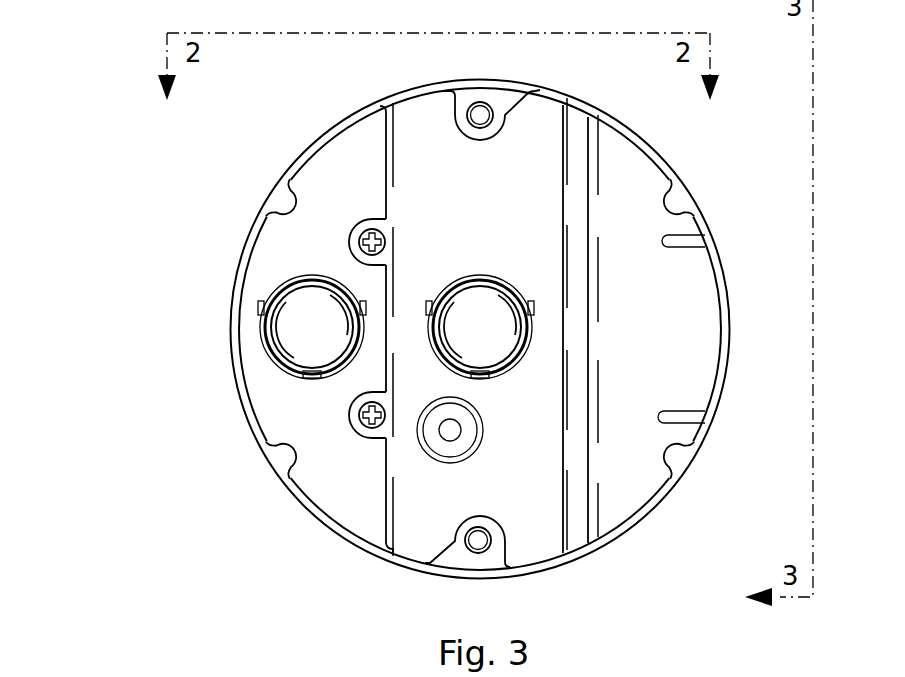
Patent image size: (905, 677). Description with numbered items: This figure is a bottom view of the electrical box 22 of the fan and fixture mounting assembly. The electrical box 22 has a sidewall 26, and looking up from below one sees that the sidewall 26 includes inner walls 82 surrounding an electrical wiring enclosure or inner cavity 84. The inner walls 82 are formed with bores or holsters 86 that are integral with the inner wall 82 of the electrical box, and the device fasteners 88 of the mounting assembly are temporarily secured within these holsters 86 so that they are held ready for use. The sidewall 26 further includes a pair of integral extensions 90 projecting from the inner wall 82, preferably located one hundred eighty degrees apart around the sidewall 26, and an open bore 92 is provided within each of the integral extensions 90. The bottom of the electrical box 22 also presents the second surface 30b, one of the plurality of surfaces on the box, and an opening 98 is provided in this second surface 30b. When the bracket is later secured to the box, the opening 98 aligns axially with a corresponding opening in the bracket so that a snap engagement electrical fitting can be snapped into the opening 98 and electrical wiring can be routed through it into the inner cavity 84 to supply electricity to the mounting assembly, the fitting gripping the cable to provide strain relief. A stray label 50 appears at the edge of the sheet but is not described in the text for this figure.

The electrical box 22 is at (165, 178).
The sidewall 26 is at (237, 311).
The second surface 30b is at (432, 330).
The inner walls 82 is at (257, 242).
The inner cavity 84 is at (668, 318).
The holsters 86 is at (353, 234).
The device fasteners 88 is at (385, 249).
The integral extensions 90 is at (481, 140).
The open bore 92 is at (480, 115).
The opening 98 is at (478, 327).
The adjacent figure element 50 is at (110, 676).